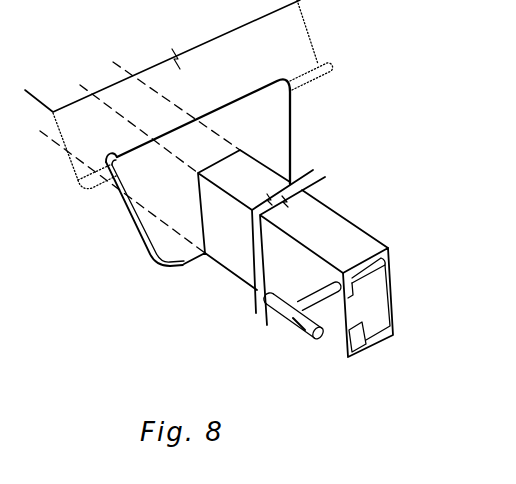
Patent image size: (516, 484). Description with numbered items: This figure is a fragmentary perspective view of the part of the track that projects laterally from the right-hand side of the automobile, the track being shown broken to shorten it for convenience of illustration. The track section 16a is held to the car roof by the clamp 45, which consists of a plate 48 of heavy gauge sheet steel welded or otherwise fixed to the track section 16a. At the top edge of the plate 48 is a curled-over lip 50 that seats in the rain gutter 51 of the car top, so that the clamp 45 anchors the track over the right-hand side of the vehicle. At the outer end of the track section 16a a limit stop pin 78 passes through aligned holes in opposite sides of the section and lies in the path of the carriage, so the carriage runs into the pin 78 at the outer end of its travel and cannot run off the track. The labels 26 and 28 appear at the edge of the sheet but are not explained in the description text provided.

The track section 16a is at (240, 258).
The panel 26 is at (0, 343).
The panel 28 is at (0, 397).
The clamp 45 is at (296, 118).
The plate 48 is at (163, 202).
The curled-over lip 50 is at (103, 168).
The rain gutter 51 is at (318, 63).
The limit stop pin 78 is at (298, 320).